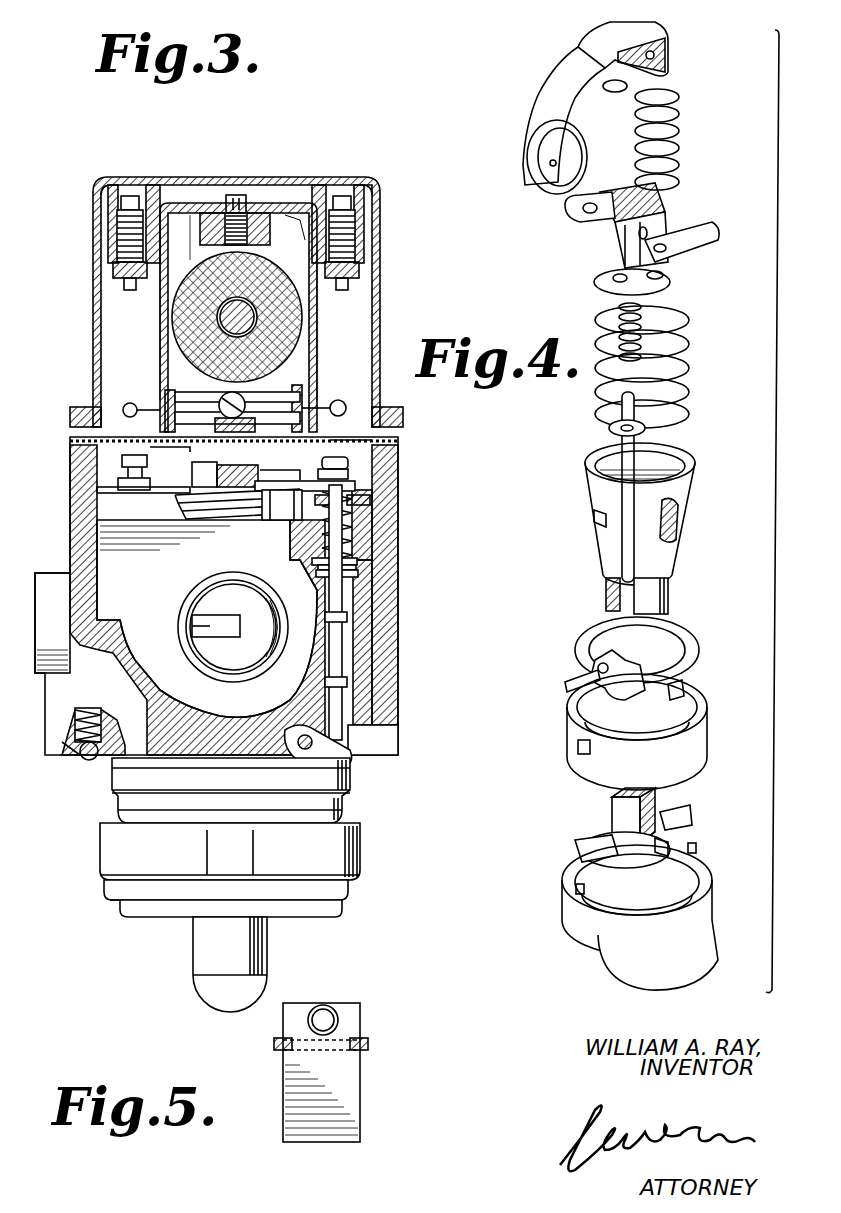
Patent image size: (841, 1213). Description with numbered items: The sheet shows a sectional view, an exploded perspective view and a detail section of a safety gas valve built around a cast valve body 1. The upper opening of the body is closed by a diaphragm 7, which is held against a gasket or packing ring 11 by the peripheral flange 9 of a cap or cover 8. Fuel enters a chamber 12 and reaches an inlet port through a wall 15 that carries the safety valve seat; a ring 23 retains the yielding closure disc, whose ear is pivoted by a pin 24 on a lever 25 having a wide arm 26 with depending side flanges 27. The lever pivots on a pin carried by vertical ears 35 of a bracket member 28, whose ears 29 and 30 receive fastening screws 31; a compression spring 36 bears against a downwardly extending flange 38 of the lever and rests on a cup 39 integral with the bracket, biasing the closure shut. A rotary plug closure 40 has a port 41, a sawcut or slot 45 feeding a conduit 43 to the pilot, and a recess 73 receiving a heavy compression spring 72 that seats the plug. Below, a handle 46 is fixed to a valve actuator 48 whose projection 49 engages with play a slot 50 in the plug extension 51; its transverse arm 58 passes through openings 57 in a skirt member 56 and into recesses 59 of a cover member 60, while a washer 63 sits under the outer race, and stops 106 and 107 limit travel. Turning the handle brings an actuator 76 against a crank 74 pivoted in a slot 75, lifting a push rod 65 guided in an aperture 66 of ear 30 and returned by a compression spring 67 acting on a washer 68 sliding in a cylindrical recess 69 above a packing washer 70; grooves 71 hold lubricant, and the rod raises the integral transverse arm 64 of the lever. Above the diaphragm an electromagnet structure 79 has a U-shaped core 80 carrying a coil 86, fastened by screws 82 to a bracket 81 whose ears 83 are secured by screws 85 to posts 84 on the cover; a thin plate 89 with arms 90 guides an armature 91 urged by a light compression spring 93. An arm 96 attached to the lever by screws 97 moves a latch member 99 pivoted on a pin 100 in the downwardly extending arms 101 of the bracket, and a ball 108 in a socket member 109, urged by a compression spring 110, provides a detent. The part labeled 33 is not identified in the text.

In FIG. 3, the valve body 1 is at (410, 492).
In FIG. 3, the diaphragm 7 is at (72, 425).
In FIG. 3, the cap or cover 8 is at (382, 290).
In FIG. 3, the peripheral flange 9 is at (384, 416).
In FIG. 3, the gasket or packing ring 11 is at (400, 441).
In FIG. 3, the chamber 12 is at (207, 618).
In FIG. 3, the wall 15 is at (100, 537).
In FIG. 4, the ring 23 is at (575, 145).
In FIG. 4, the pin 24 is at (550, 163).
In FIG. 3, the lever 25 is at (300, 458).
In FIG. 4, the lever 25 is at (545, 83).
In FIG. 3, the wide arm 26 is at (135, 402).
In FIG. 4, the wide arm 26 is at (618, 33).
In FIG. 3, the side flanges 27 is at (413, 451).
In FIG. 4, the side flanges 27 is at (650, 62).
In FIG. 3, the bracket member 28 is at (252, 534).
In FIG. 4, the bracket member 28 is at (686, 208).
In FIG. 3, the ear 29 is at (130, 490).
In FIG. 4, the ear 29 is at (575, 205).
In FIG. 3, the ear 30 is at (352, 506).
In FIG. 4, the ear 30 is at (690, 255).
In FIG. 3, the fastening screws 31 is at (130, 462).
In FIG. 3, the plate 33 is at (97, 493).
In FIG. 3, the vertical ears 35 is at (160, 445).
In FIG. 4, the vertical ears 35 is at (598, 200).
In FIG. 4, the compression spring 36 is at (680, 125).
In FIG. 4, the downwardly extending flange 38 is at (668, 48).
In FIG. 4, the cup 39 is at (678, 285).
In FIG. 3, the rotary plug closure 40 is at (202, 651).
In FIG. 4, the rotary plug closure 40 is at (688, 560).
In FIG. 4, the port 41 is at (680, 525).
In FIG. 3, the conduit 43 is at (35, 665).
In FIG. 3, the sawcut or slot 45 is at (194, 618).
In FIG. 4, the sawcut or slot 45 is at (594, 516).
In FIG. 3, the handle 46 is at (283, 955).
In FIG. 4, the handle 46 is at (688, 980).
In FIG. 4, the valve actuator 48 is at (690, 846).
In FIG. 4, the projection 49 is at (650, 800).
In FIG. 4, the slot 50 is at (606, 597).
In FIG. 4, the extension 51 is at (670, 602).
In FIG. 3, the hollow cylindrical skirt member 56 is at (343, 796).
In FIG. 4, the hollow cylindrical skirt member 56 is at (700, 750).
In FIG. 4, the openings 57 is at (578, 752).
In FIG. 4, the transverse arm 58 is at (675, 807).
In FIG. 4, the recesses 59 is at (696, 848).
In FIG. 3, the cover member 60 is at (376, 856).
In FIG. 4, the cover member 60 is at (610, 936).
In FIG. 4, the washer 63 is at (690, 640).
In FIG. 3, the transverse arm 64 is at (356, 492).
In FIG. 4, the transverse arm 64 is at (610, 88).
In FIG. 3, the push rod 65 is at (343, 603).
In FIG. 4, the push rod 65 is at (622, 462).
In FIG. 4, the aperture 66 is at (625, 278).
In FIG. 3, the compression spring 67 is at (354, 546).
In FIG. 4, the compression spring 67 is at (618, 312).
In FIG. 3, the washer 68 is at (357, 566).
In FIG. 4, the washer 68 is at (646, 430).
In FIG. 3, the cylindrical recess 69 is at (315, 560).
In FIG. 3, the yielding gasket or packing washer 70 is at (358, 575).
In FIG. 3, the grooves 71 is at (348, 618).
In FIG. 3, the heavy compression spring 72 is at (187, 512).
In FIG. 4, the heavy compression spring 72 is at (690, 350).
In FIG. 4, the recess 73 is at (675, 463).
In FIG. 3, the crank 74 is at (345, 760).
In FIG. 4, the crank 74 is at (628, 675).
In FIG. 3, the slot 75 is at (382, 742).
In FIG. 3, the actuator 76 is at (278, 768).
In FIG. 4, the actuator 76 is at (575, 677).
In FIG. 3, the electromagnet structure 79 is at (196, 244).
In FIG. 3, the U-shaped core 80 is at (256, 322).
In FIG. 3, the bracket 81 is at (300, 206).
In FIG. 3, the screws 82 is at (236, 195).
In FIG. 3, the ears 83 is at (113, 272).
In FIG. 3, the posts 84 is at (98, 205).
In FIG. 3, the screws 85 is at (118, 232).
In FIG. 3, the coil 86 is at (190, 317).
In FIG. 3, the thin plate 89 is at (276, 212).
In FIG. 5, the thin plate 89 is at (345, 1040).
In FIG. 5, the arms 90 is at (368, 1042).
In FIG. 5, the armature 91 is at (362, 1108).
In FIG. 5, the light compression spring 93 is at (325, 1006).
In FIG. 3, the arm 96 is at (170, 395).
In FIG. 3, the screws 97 is at (242, 400).
In FIG. 3, the latch member 99 is at (300, 388).
In FIG. 3, the pin 100 is at (333, 400).
In FIG. 3, the downwardly extending arms 101 is at (160, 300).
In FIG. 4, the stop 106 is at (585, 842).
In FIG. 4, the stop 107 is at (680, 822).
In FIG. 3, the ball 108 is at (86, 762).
In FIG. 3, the socket member 109 is at (72, 758).
In FIG. 3, the compression spring 110 is at (72, 718).